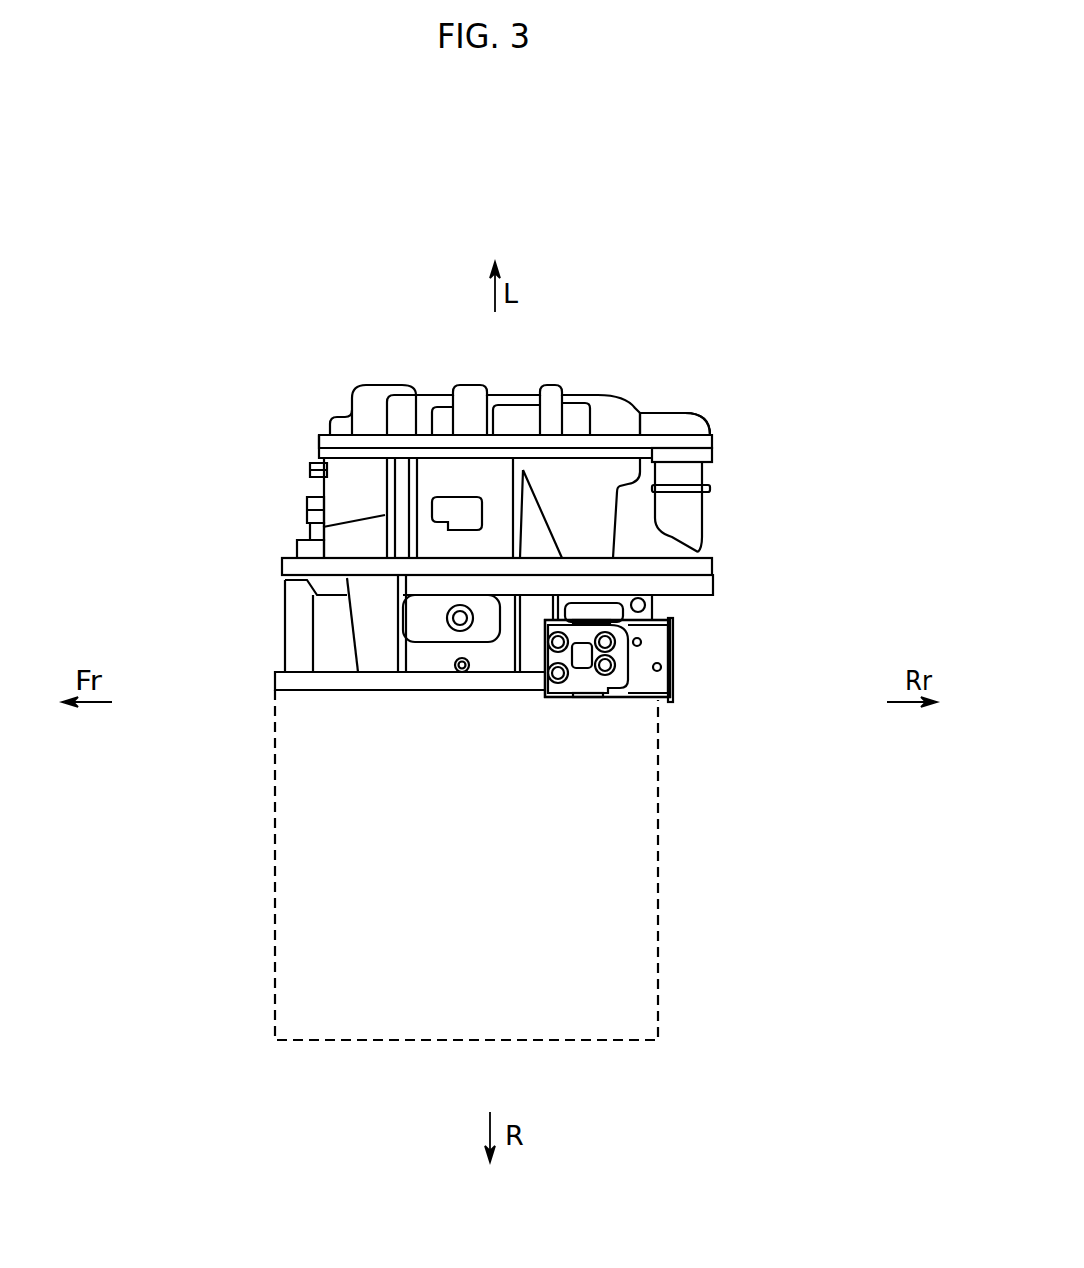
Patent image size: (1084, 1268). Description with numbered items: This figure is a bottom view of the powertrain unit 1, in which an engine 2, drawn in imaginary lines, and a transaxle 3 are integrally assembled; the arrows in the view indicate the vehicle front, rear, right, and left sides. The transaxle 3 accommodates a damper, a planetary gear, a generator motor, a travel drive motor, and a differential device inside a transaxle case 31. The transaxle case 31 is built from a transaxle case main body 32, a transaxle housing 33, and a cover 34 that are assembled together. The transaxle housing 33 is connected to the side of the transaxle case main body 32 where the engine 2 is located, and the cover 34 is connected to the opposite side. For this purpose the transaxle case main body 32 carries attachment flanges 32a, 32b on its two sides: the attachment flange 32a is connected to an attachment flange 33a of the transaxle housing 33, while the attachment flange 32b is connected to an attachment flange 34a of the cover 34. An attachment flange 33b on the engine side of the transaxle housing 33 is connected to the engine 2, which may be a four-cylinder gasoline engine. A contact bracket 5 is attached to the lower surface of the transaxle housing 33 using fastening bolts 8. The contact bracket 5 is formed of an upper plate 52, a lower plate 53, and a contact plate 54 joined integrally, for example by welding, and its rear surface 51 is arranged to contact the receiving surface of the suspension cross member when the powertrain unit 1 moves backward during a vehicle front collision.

The powertrain unit 1 is at (253, 292).
The engine 2 is at (658, 867).
The transaxle 3 is at (596, 392).
The contact bracket 5 is at (673, 682).
The fastening bolts 8 is at (550, 650).
The transaxle case 31 is at (309, 469).
The transaxle case main body 32 is at (640, 507).
The attachment flange 32a is at (708, 557).
The attachment flange 32b is at (705, 455).
The transaxle housing 33 is at (328, 628).
The attachment flange 33a is at (702, 587).
The attachment flange 33b is at (287, 683).
The cover 34 is at (428, 400).
The attachment flange 34a is at (680, 440).
The rear surface 51 is at (607, 658).
The upper plate 52 is at (558, 697).
The lower plate 53 is at (640, 683).
The contact plate 54 is at (678, 653).